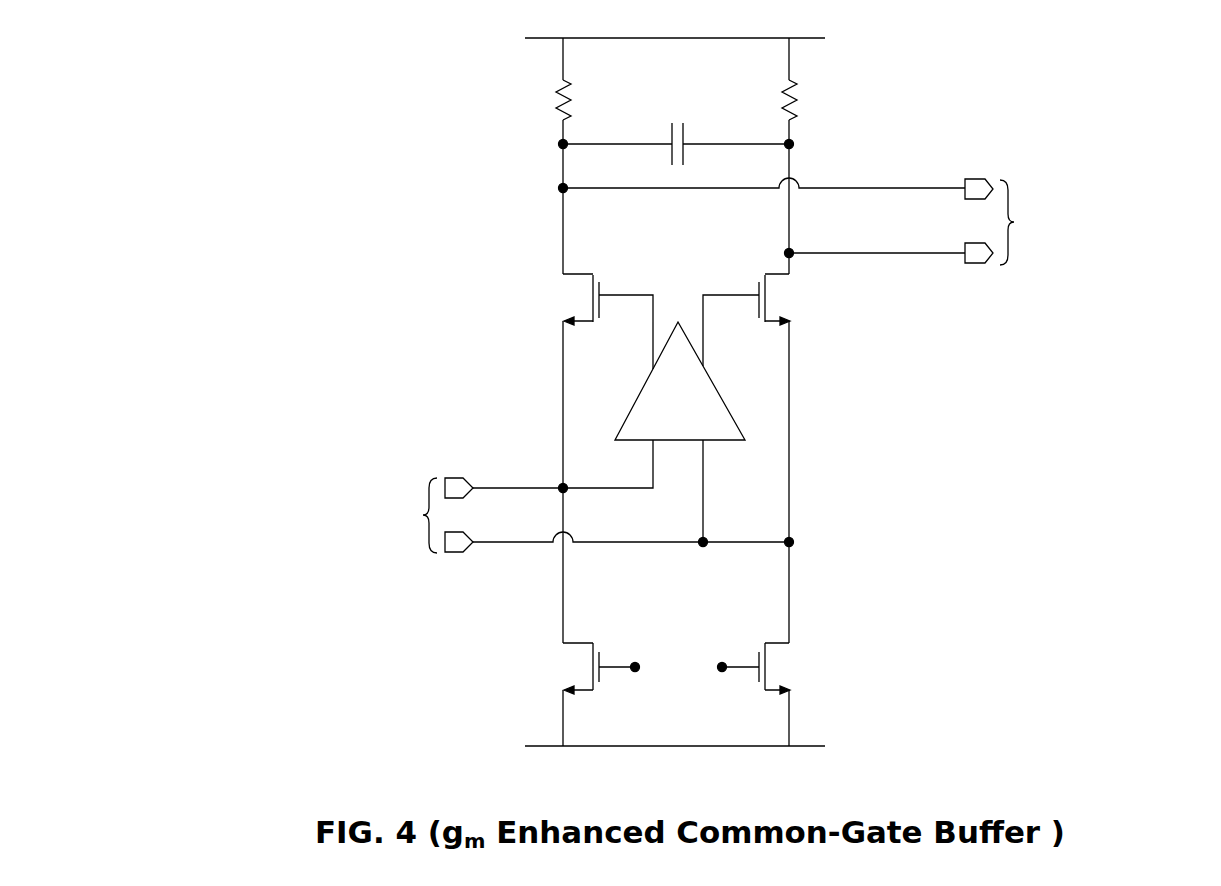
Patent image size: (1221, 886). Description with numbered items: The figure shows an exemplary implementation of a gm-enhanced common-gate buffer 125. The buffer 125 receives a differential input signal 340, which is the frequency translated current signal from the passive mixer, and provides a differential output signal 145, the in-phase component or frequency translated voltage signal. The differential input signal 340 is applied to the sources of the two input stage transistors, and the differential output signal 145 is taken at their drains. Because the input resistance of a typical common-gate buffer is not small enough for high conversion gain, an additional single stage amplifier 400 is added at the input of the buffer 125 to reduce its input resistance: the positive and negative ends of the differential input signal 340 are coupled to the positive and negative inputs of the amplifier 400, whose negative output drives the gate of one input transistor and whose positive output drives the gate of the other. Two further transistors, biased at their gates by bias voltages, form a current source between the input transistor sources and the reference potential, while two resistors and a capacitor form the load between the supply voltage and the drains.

The gm-enhanced CG buffer 125 is at (210, 713).
The differential output signal 145 is at (860, 215).
The differential input signal 340 is at (524, 504).
The additional single stage amplifier 400 is at (643, 393).